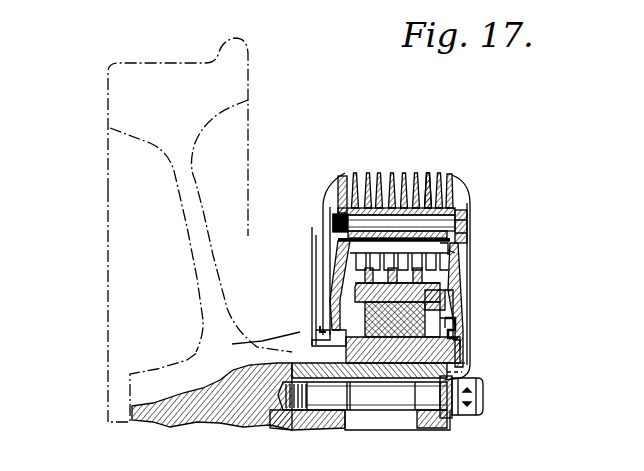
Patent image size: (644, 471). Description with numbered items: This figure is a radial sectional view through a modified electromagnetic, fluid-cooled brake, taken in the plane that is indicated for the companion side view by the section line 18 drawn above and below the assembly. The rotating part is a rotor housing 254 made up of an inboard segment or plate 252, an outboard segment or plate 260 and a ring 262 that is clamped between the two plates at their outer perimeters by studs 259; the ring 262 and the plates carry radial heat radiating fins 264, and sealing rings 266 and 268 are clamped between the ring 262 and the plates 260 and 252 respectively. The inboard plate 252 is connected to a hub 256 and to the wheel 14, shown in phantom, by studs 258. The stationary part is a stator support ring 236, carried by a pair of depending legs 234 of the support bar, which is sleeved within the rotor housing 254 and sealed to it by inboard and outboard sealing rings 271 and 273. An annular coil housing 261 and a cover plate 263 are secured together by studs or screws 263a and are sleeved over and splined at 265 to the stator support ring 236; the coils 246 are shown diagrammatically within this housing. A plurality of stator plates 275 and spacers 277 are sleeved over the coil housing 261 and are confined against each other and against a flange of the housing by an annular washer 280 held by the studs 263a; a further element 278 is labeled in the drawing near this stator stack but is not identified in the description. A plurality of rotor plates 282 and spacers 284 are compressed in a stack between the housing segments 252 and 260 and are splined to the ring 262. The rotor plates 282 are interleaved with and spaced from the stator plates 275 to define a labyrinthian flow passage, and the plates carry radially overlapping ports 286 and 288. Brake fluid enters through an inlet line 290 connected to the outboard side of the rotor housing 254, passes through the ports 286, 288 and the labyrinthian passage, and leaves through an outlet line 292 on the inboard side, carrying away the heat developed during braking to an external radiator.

The wheel 14 is at (135, 126).
The section line 18— 18 is at (398, 188).
The depending legs 234 is at (306, 238).
The stator support ring 236 is at (288, 359).
The coils 246 is at (433, 318).
The inboard segment or plate 252 is at (453, 262).
The rotor housing 254 is at (459, 174).
The hub 256 is at (414, 360).
The studs 258 is at (472, 418).
The studs 259 is at (468, 208).
The outboard segment or plate 260 is at (350, 263).
The annular coil housing 261 is at (333, 310).
The ring 262 is at (425, 176).
The cover plate 263 is at (453, 330).
The studs or screws 263a is at (453, 308).
The radial heat radiating fins 264 is at (333, 187).
The spline 265 is at (433, 342).
The sealing ring 266 is at (323, 228).
The sealing ring 268 is at (455, 238).
The inboard sealing ring 271 is at (470, 355).
The outboard sealing ring 273 is at (323, 325).
The stator plates 275 is at (455, 273).
The spacers 277 is at (455, 285).
The insulating block 278 is at (360, 287).
The annular washer 280 is at (443, 292).
The rotor plates 282 is at (455, 250).
The spacers 284 is at (468, 222).
The ports 286 is at (353, 272).
The ports 288 is at (350, 253).
The inlet line 290 is at (249, 343).
The outlet line 292 is at (455, 368).